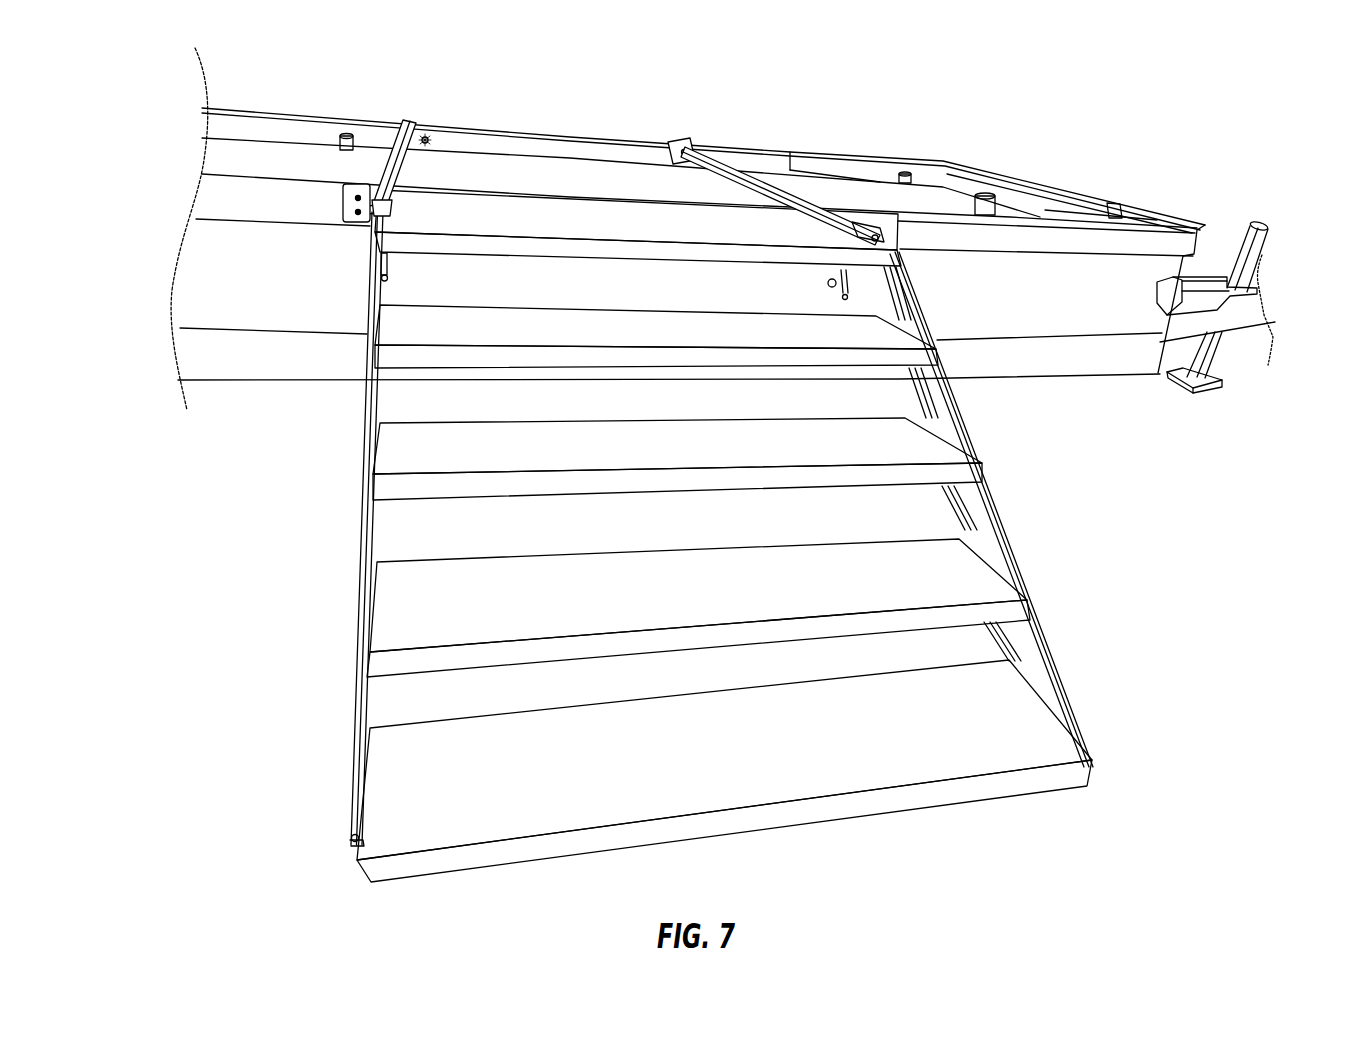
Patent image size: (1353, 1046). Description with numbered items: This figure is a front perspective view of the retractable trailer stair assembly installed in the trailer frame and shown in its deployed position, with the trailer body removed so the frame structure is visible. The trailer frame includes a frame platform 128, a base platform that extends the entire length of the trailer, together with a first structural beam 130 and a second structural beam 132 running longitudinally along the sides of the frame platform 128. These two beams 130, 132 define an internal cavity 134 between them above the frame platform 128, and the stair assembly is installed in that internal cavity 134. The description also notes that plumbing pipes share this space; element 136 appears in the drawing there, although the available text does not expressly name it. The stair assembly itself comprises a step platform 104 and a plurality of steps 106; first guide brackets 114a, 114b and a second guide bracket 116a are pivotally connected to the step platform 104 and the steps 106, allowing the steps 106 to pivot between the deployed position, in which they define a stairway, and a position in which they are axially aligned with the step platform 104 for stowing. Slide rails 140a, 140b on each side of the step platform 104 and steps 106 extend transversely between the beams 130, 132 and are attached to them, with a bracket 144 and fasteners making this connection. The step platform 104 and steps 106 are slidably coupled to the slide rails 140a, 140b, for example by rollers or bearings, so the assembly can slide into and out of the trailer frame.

The step platform 104 is at (585, 224).
The steps 106 is at (588, 338).
The first guide bracket 114a is at (962, 418).
The first guide bracket 114b is at (360, 457).
The second guide bracket 116a is at (963, 522).
The frame platform 128 is at (215, 157).
The first structural beam 130 is at (267, 200).
The second structural beam 132 is at (445, 132).
The internal cavity 134 is at (522, 172).
The post 136 is at (347, 130).
The slide rail 140a is at (408, 118).
The slide rail 140b is at (700, 143).
The bracket 144 is at (351, 203).